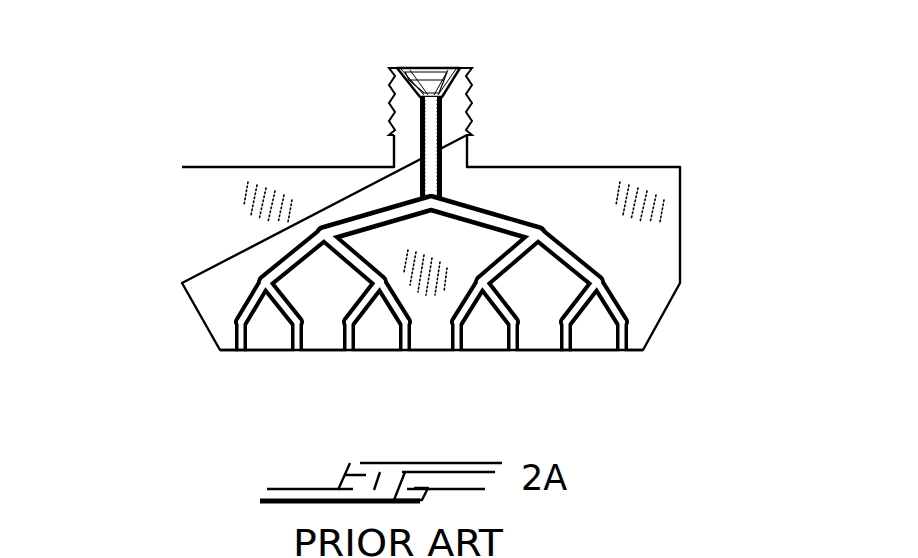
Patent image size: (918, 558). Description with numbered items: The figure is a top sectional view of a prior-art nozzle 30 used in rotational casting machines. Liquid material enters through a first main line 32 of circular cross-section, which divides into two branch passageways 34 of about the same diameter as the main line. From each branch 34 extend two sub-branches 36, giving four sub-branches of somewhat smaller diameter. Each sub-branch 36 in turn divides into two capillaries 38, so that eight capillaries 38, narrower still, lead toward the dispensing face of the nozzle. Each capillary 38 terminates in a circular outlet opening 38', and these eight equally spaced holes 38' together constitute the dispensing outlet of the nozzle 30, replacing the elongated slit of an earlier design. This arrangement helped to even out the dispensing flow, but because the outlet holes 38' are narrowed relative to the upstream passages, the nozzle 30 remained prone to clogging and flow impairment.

The nozzle 30 is at (680, 137).
The first main line 32 is at (443, 112).
The branch passageways 34 is at (367, 210).
The sub-branches 36 is at (343, 265).
The capillaries 38 is at (406, 359).
The circular outlet opening 38' is at (429, 380).